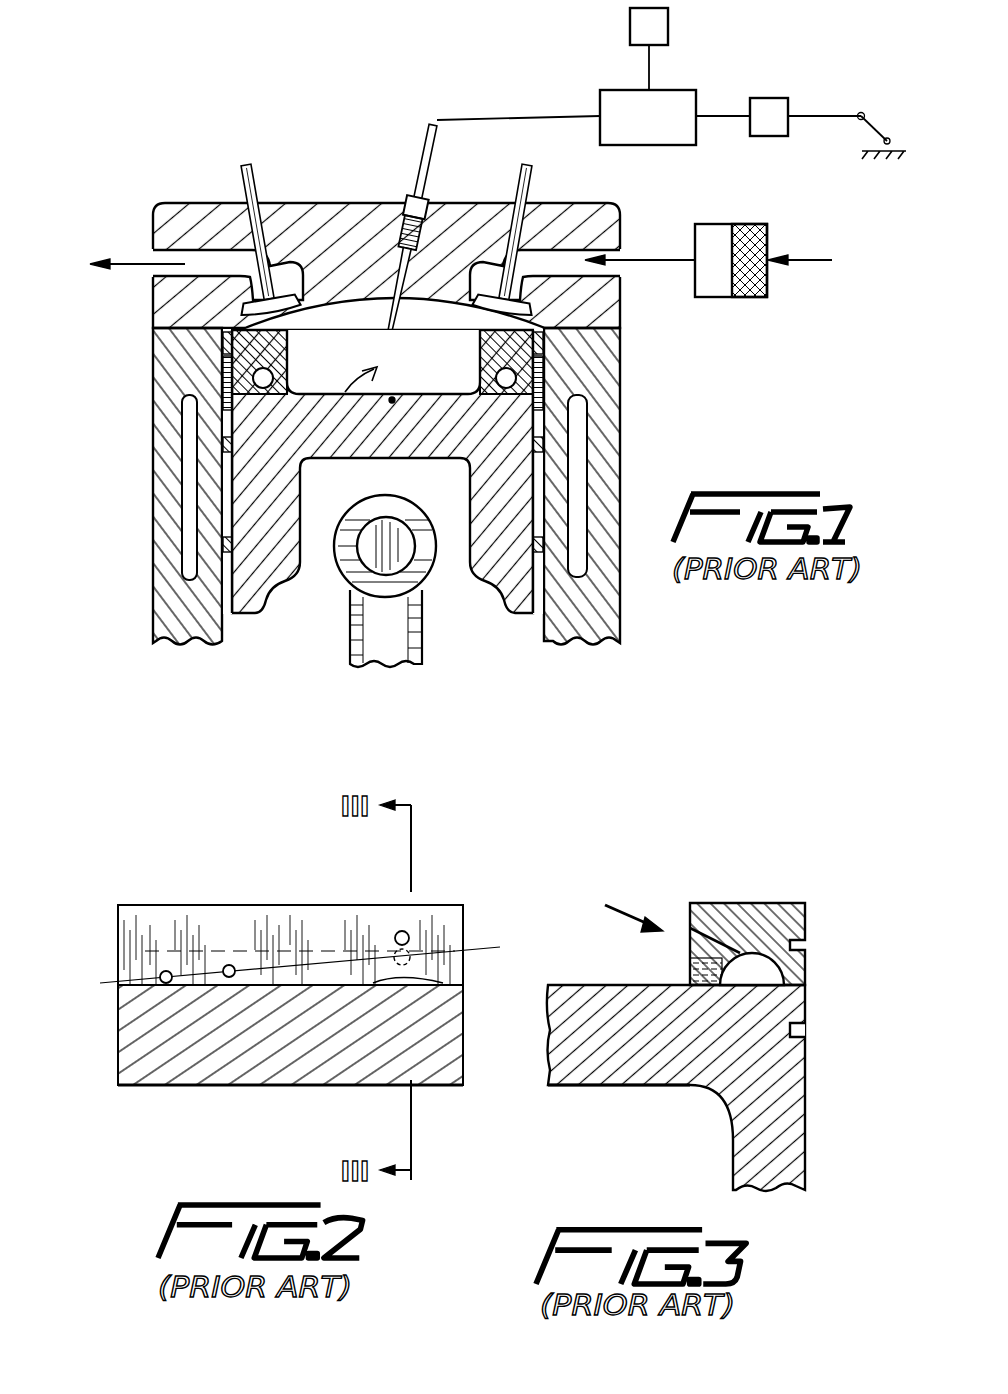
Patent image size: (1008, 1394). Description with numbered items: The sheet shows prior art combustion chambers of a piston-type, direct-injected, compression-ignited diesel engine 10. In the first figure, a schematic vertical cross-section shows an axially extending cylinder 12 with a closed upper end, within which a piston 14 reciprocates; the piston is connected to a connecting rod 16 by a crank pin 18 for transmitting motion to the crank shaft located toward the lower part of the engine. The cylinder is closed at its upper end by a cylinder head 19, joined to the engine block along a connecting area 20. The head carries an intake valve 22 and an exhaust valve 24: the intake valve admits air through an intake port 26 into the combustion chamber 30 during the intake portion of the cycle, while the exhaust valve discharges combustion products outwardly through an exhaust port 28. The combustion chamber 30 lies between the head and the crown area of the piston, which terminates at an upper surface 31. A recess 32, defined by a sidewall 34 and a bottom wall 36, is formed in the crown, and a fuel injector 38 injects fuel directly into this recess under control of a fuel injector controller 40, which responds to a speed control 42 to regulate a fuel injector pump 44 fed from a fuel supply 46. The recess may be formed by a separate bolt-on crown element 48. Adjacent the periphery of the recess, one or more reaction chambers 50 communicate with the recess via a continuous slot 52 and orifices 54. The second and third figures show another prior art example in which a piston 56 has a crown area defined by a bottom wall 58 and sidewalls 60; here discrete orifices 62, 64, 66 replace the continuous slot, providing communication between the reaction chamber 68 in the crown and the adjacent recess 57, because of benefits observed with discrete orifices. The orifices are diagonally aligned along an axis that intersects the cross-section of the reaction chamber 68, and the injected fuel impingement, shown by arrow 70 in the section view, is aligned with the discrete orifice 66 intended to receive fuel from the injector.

In FIG. 1, the engine 10 is at (642, 408).
In FIG. 1, the cylinder 12 is at (540, 623).
In FIG. 1, the piston 14 is at (268, 607).
In FIG. 1, the connecting rod 16 is at (350, 652).
In FIG. 1, the crank pin 18 is at (357, 562).
In FIG. 1, the cylinder head 19 is at (330, 204).
In FIG. 1, the connecting area 20 is at (612, 324).
In FIG. 1, the intake valve 22 is at (478, 270).
In FIG. 1, the exhaust valve 24 is at (302, 276).
In FIG. 1, the intake port 26 is at (622, 250).
In FIG. 1, the exhaust port 28 is at (160, 252).
In FIG. 1, the combustion chamber 30 is at (346, 336).
In FIG. 1, the upper surface 31 is at (606, 297).
In FIG. 1, the recess 32 is at (345, 398).
In FIG. 1, the sidewall 34 is at (545, 270).
In FIG. 1, the bottom wall 36 is at (395, 402).
In FIG. 1, the fuel injector 38 is at (392, 262).
In FIG. 1, the fuel injector controller 40 is at (780, 98).
In FIG. 1, the speed control 42 is at (862, 106).
In FIG. 1, the fuel injector pump 44 is at (605, 90).
In FIG. 1, the fuel supply 46 is at (668, 25).
In FIG. 1, the bolt-on crown element 48 is at (527, 350).
In FIG. 1, the reaction chamber 50 is at (222, 380).
In FIG. 1, the continuous slot 52 is at (495, 388).
In FIG. 1, the orifices 54 is at (222, 340).
In FIG. 2, the piston 56 is at (245, 1088).
In FIG. 3, the piston 56 is at (808, 1118).
In FIG. 3, the recess 57 is at (588, 882).
In FIG. 2, the bottom wall 58 is at (433, 981).
In FIG. 3, the bottom wall 58 is at (577, 984).
In FIG. 2, the sidewalls 60 is at (120, 922).
In FIG. 3, the sidewalls 60 is at (687, 943).
In FIG. 2, the discrete orifice 62 is at (166, 970).
In FIG. 3, the discrete orifice 62 is at (687, 970).
In FIG. 2, the discrete orifice 64 is at (232, 966).
In FIG. 3, the discrete orifice 64 is at (706, 971).
In FIG. 2, the discrete orifice 66 is at (401, 931).
In FIG. 3, the discrete orifice 66 is at (690, 927).
In FIG. 2, the reaction chamber 68 is at (197, 940).
In FIG. 3, the reaction chamber 68 is at (800, 956).
In FIG. 3, the arrow 70 is at (645, 900).